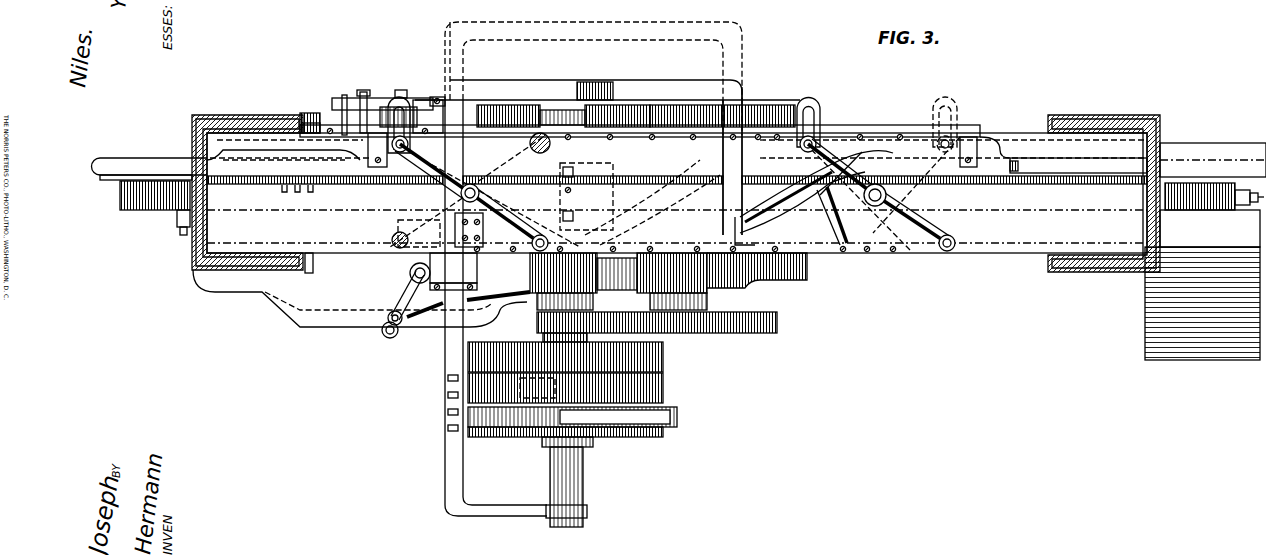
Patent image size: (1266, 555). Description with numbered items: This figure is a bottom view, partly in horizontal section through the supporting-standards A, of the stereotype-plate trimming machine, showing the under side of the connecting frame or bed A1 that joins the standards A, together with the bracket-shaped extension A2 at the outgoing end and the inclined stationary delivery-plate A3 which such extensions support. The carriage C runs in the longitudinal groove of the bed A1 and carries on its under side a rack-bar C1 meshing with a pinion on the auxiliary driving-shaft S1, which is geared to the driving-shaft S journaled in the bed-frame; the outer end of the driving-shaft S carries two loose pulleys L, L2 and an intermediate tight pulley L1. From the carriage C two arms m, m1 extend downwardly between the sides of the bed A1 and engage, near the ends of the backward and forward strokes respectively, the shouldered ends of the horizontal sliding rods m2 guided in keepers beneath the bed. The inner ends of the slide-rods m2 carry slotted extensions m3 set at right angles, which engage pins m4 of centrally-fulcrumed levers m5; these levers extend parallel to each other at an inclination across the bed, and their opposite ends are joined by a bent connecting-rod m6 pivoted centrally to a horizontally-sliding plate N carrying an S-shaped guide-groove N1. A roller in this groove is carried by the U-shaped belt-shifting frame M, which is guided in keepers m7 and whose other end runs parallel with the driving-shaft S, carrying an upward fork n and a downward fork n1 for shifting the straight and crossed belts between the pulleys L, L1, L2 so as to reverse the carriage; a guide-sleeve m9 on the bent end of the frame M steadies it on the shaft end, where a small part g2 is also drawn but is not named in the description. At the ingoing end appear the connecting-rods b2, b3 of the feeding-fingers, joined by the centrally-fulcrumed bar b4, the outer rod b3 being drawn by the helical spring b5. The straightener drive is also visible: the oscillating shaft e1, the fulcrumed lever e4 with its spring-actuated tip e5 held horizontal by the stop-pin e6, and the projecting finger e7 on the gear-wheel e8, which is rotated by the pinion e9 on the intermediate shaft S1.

The supporting-standards A is at (242, 130).
The connecting frame or bed A1 is at (213, 233).
The bracket-shaped extension A2 is at (1185, 150).
The inclined stationary delivery-plate A3 is at (1165, 312).
The carriage C is at (371, 185).
The rack-bar C1 is at (150, 200).
The bolt g2 is at (1248, 199).
The arm m is at (109, 178).
The arm m1 is at (622, 185).
The horizontal sliding rod m2 is at (115, 170).
The slotted extension m3 is at (402, 100).
The pin m4 is at (408, 162).
The centrally-fulcrumed lever m5 is at (436, 172).
The bent connecting-rod m6 is at (762, 200).
The keeper m7 is at (400, 338).
The guide-sleeve m9 is at (588, 511).
The belt-shifting frame M is at (548, 88).
The belt-shifting fork n is at (455, 396).
The belt-shifting fork n1 is at (679, 418).
The sliding plate N is at (791, 262).
The curved guide-groove N1 is at (862, 152).
The driving-shaft S is at (546, 338).
The auxiliary driving-shaft S1 is at (708, 312).
The loose pulley L is at (665, 358).
The tight pulley L1 is at (665, 388).
The loose pulley L2 is at (660, 433).
The connecting-rod b2 is at (178, 233).
The connecting-rod b3 is at (328, 327).
The centrally-fulcrumed bar b4 is at (398, 300).
The helical spring b5 is at (443, 318).
The oscillating shaft e1 is at (327, 123).
The fulcrumed lever e4 is at (372, 98).
The spring-actuated tip e5 is at (442, 97).
The stop-pin e6 is at (344, 95).
The projecting finger e7 is at (500, 105).
The gear-wheel e8 is at (598, 118).
The pinion e9 is at (678, 110).